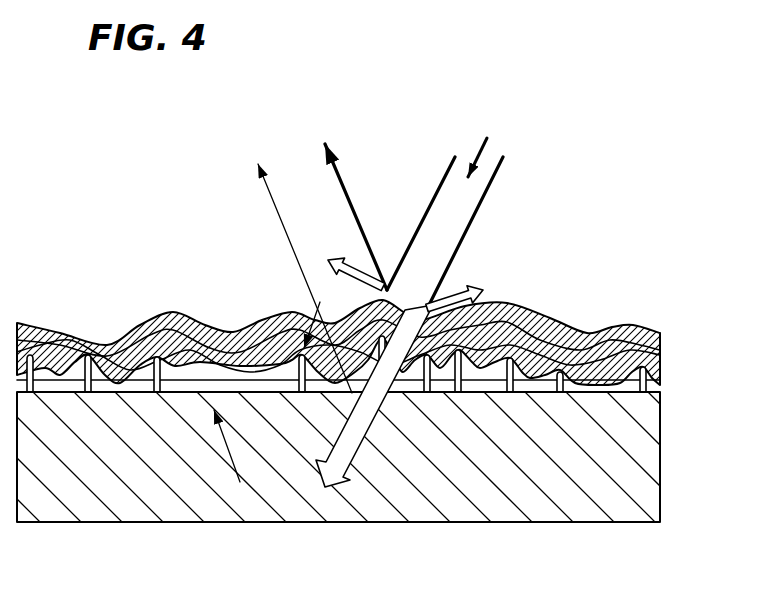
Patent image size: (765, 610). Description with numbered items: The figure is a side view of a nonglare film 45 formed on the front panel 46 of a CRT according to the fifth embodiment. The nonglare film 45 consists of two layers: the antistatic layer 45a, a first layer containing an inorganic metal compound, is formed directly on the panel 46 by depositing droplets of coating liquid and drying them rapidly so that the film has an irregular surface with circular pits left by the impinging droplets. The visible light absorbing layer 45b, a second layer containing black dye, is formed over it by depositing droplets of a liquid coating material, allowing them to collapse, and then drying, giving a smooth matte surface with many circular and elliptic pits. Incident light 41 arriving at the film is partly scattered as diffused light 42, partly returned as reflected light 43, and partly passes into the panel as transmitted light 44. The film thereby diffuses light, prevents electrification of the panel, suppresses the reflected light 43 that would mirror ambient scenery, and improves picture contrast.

The incident light 41 is at (500, 150).
The diffused light 42 is at (487, 290).
The reflected light 43 is at (118, 330).
The transmitted light 44 is at (347, 443).
The nonglare film 45 is at (382, 312).
The antistatic layer 45a is at (668, 362).
The visible light absorbing layer 45b is at (668, 315).
The panel 46 is at (648, 486).